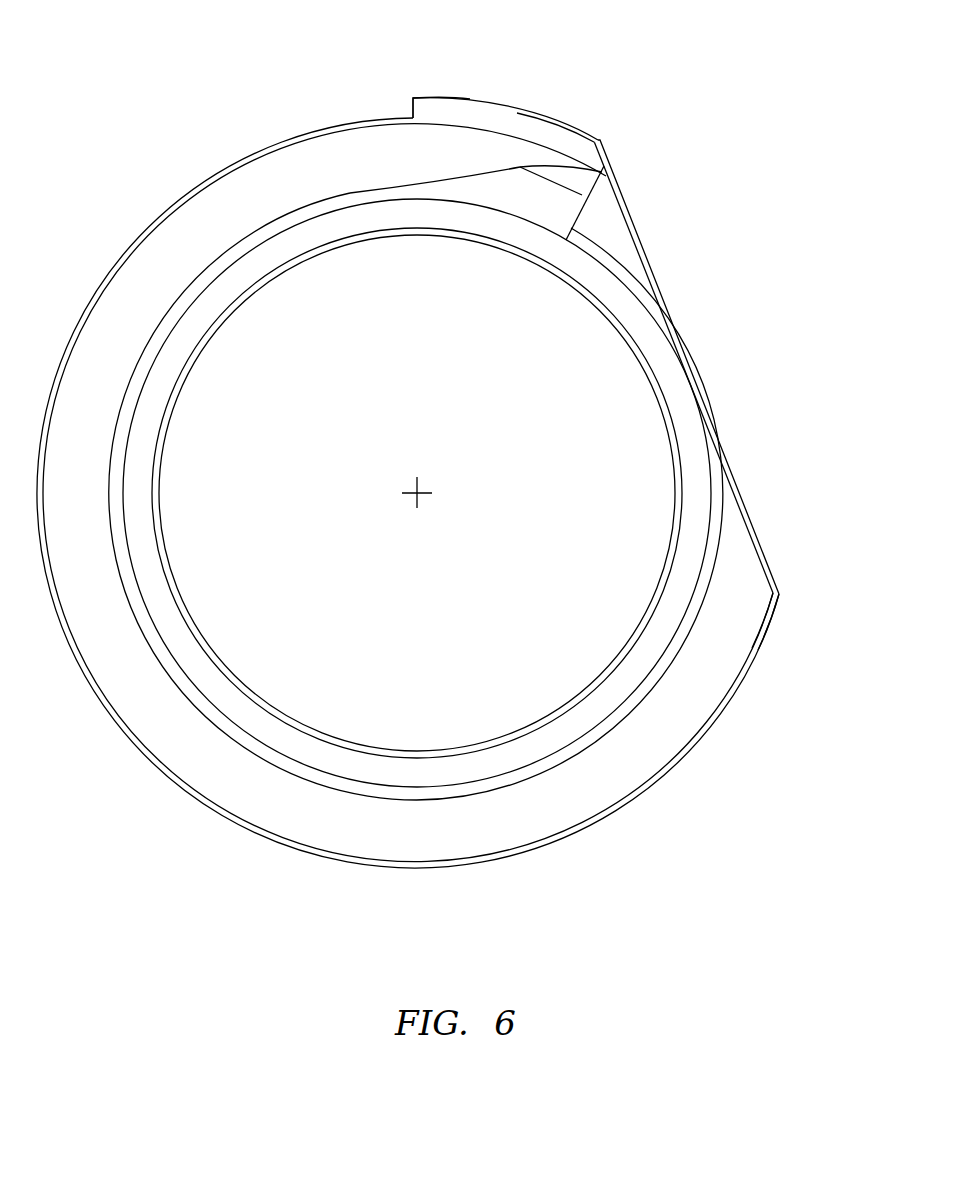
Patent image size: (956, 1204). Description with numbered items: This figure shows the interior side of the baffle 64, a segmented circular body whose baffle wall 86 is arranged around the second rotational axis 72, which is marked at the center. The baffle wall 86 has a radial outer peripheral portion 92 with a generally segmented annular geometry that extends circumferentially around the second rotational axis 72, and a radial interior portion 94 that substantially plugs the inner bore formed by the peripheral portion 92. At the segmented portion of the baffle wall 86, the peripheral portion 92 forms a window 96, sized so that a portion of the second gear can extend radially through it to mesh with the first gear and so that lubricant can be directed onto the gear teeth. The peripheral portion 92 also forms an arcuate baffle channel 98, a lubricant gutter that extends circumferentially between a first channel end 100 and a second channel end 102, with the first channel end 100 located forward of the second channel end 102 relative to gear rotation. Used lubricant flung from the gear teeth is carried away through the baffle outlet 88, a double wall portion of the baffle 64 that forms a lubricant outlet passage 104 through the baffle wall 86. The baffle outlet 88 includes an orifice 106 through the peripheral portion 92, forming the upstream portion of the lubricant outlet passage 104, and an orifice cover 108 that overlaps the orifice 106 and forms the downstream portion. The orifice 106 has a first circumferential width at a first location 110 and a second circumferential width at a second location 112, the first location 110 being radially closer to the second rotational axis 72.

The baffle 64 is at (448, 484).
The second rotational axis 72 is at (418, 496).
The baffle wall 86 is at (175, 825).
The baffle outlet 88 is at (540, 104).
The radial outer peripheral portion 92 is at (573, 803).
The radial interior portion 94 is at (620, 405).
The window 96 is at (667, 256).
The baffle channel 98 is at (734, 556).
The first channel end 100 is at (635, 212).
The second channel end 102 is at (758, 537).
The lubricant outlet passage 104 is at (536, 192).
The orifice 106 is at (463, 190).
The orifice cover 108 is at (470, 110).
The first location 110 is at (608, 156).
The second location 112 is at (565, 260).